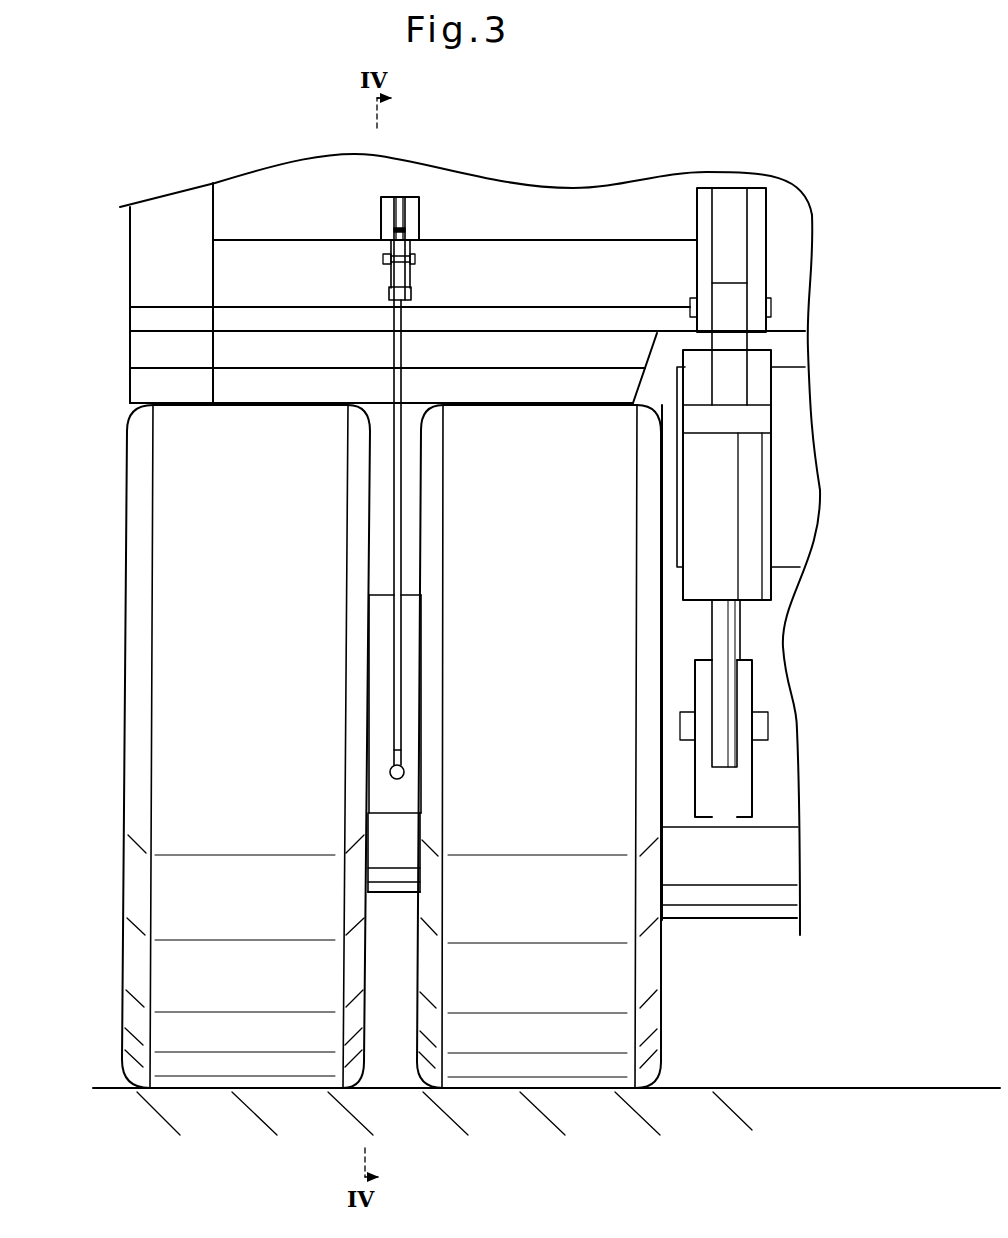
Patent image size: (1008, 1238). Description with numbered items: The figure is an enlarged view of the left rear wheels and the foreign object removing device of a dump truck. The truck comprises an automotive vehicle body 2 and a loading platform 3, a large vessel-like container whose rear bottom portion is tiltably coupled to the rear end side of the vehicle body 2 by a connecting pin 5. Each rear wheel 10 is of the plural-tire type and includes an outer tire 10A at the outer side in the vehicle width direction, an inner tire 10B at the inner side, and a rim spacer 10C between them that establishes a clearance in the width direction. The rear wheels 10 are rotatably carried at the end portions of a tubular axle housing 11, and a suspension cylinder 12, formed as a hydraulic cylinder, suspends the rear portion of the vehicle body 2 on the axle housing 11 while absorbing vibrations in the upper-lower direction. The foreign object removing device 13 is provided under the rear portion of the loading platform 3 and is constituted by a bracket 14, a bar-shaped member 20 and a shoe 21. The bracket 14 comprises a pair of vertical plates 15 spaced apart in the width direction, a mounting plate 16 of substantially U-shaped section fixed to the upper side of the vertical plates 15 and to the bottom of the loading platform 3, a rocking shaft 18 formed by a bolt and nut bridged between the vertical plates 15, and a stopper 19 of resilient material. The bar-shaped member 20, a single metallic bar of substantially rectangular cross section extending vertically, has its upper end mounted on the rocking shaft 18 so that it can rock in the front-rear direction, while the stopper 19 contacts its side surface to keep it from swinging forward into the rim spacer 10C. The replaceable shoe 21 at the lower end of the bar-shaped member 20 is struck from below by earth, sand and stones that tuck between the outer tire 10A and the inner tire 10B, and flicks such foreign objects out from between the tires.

The vehicle body 2 is at (798, 385).
The loading platform 3 is at (648, 188).
The connecting pin 5 is at (770, 308).
The rear wheel 10 is at (358, 789).
The outer tire 10A is at (210, 1063).
The inner tire 10B is at (593, 1068).
The rim spacer 10C is at (387, 889).
The axle housing 11 is at (785, 703).
The suspension cylinder 12 is at (753, 473).
The foreign object removing device 13 is at (386, 662).
The bracket 14 is at (420, 219).
The vertical plate 15 is at (393, 225).
The mounting plate 16 is at (398, 200).
The rocking shaft 18 is at (382, 258).
The stopper 19 is at (388, 293).
The bar-shaped member 20 is at (397, 358).
The shoe 21 is at (389, 773).